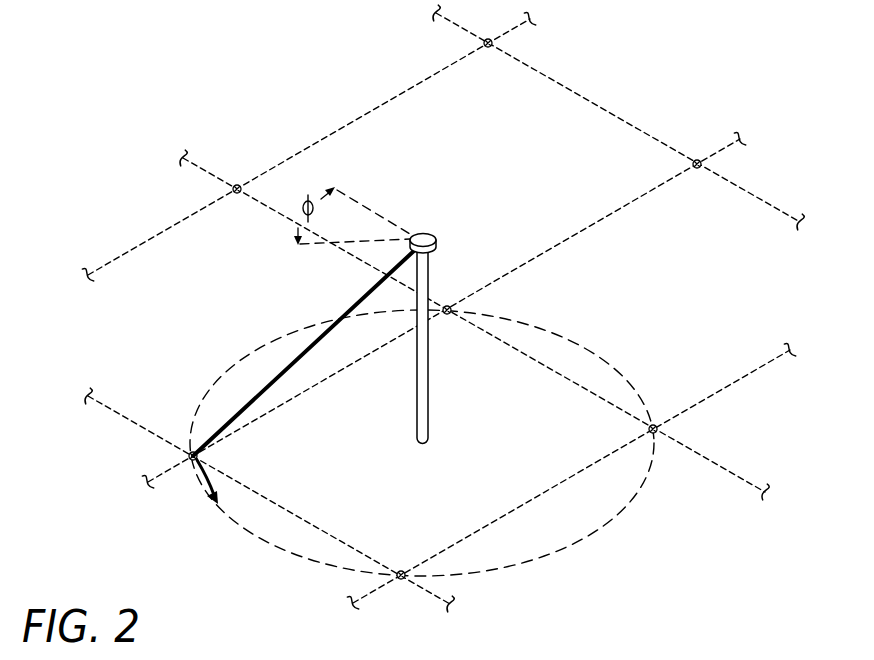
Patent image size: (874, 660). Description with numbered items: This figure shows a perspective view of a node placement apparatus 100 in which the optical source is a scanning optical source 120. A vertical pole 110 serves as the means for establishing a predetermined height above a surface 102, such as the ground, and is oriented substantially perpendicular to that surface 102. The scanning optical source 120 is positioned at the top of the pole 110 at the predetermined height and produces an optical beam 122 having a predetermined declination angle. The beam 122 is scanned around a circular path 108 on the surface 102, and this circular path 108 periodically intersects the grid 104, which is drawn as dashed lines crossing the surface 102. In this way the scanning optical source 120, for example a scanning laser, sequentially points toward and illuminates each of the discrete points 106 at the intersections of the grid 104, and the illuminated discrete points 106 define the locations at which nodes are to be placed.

The node placement apparatus 100 is at (449, 180).
The surface 102 is at (516, 474).
The grid 104 is at (558, 522).
The discrete points 106 is at (189, 455).
The circular path 108 is at (197, 487).
The pole 110 is at (429, 369).
The scanning optical source 120 is at (428, 233).
The optical beam 122 is at (291, 361).